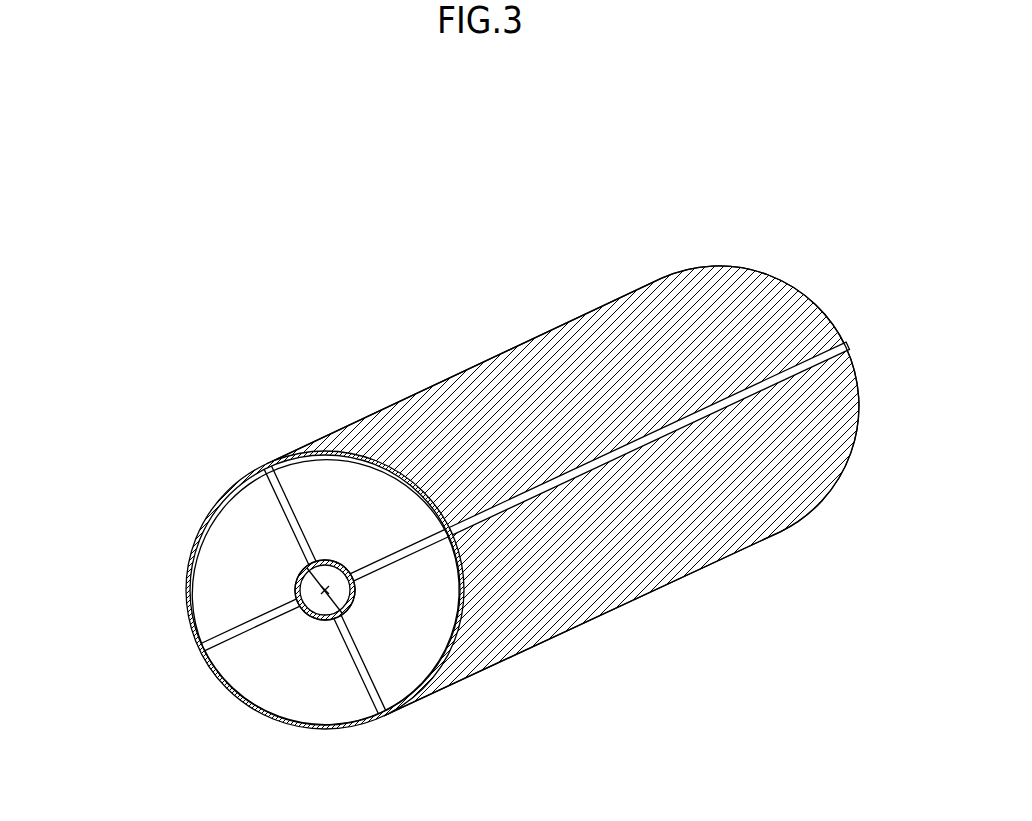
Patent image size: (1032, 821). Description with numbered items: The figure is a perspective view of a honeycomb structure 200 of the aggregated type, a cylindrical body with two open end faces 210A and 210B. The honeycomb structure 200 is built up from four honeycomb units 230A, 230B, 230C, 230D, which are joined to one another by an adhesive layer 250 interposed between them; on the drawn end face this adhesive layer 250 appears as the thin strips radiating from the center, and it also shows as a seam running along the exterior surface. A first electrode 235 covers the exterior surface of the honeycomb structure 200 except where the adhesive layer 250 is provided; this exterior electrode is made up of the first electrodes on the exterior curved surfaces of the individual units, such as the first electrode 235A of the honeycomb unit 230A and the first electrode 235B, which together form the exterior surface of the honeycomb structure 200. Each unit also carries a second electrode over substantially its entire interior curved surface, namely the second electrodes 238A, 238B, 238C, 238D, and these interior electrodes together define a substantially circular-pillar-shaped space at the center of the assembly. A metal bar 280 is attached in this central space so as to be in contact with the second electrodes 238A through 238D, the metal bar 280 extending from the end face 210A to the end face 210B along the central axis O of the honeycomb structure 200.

The honeycomb structure 200 is at (570, 177).
The open end face 210A is at (160, 688).
The open end face 210B is at (810, 262).
The honeycomb unit 230A is at (298, 487).
The honeycomb unit 230B is at (400, 663).
The honeycomb unit 230C is at (290, 687).
The honeycomb unit 230D is at (217, 582).
The first electrode 235 is at (578, 518).
The first electrode 235A is at (480, 382).
The first electrode 235B is at (627, 573).
The second electrode 238A is at (368, 560).
The second electrode 238B is at (353, 601).
The second electrode 238C is at (309, 614).
The second electrode 238D is at (296, 590).
The adhesive layer 250 is at (583, 470).
The metal bar 280 is at (316, 622).
The central axis O is at (327, 589).